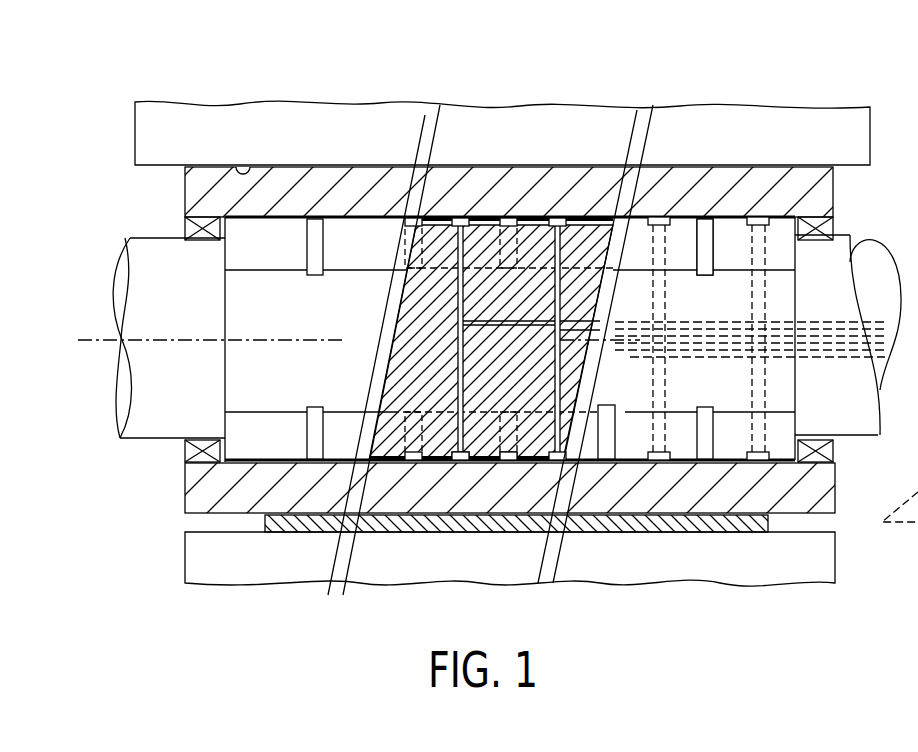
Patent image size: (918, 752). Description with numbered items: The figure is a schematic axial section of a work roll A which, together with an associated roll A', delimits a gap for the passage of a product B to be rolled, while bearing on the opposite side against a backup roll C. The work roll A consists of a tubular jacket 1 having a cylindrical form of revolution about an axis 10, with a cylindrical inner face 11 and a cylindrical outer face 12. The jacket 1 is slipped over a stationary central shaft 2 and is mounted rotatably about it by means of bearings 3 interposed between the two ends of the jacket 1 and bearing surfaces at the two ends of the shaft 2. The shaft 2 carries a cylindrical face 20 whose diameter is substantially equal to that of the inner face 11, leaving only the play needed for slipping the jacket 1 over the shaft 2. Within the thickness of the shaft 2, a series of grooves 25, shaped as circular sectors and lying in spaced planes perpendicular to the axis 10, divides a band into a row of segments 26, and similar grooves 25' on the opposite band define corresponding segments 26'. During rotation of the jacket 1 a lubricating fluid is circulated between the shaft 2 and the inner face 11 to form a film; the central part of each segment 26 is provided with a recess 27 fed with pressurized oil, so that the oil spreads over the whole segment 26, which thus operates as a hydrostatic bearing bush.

The tubular jacket 1 is at (368, 185).
The central shaft 2 is at (150, 283).
The bearings 3 is at (185, 224).
The axis 10 is at (100, 345).
The cylindrical inner face 11 is at (282, 212).
The cylindrical outer face 12 is at (236, 166).
The cylindrical face 20 is at (740, 226).
The grooves 25 is at (491, 264).
The segments 26 is at (509, 264).
The recess 27 is at (510, 216).
The grooves 25' is at (443, 539).
The segments 26' is at (499, 539).
The work roll A is at (882, 179).
The associated roll A' is at (551, 559).
The product to be rolled B is at (724, 521).
The backup roll C is at (812, 135).